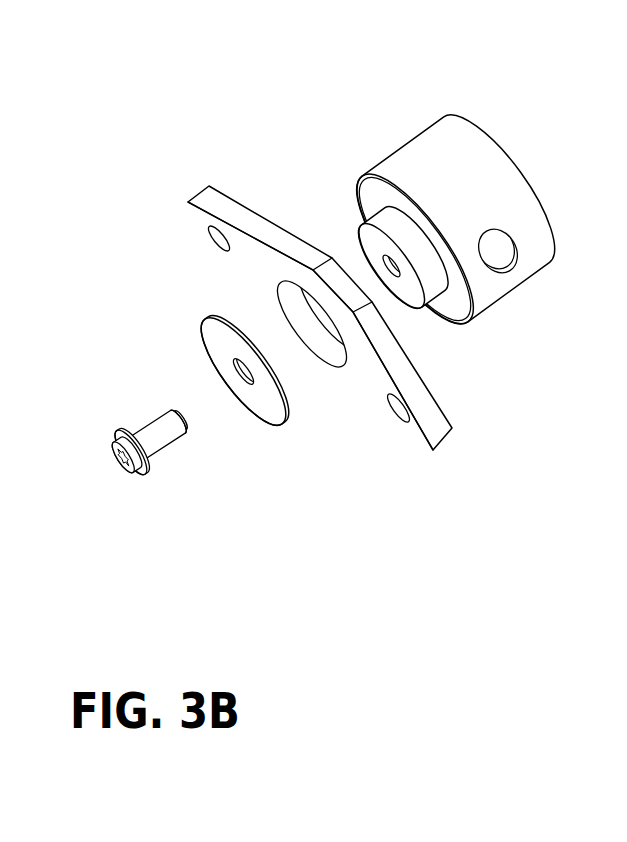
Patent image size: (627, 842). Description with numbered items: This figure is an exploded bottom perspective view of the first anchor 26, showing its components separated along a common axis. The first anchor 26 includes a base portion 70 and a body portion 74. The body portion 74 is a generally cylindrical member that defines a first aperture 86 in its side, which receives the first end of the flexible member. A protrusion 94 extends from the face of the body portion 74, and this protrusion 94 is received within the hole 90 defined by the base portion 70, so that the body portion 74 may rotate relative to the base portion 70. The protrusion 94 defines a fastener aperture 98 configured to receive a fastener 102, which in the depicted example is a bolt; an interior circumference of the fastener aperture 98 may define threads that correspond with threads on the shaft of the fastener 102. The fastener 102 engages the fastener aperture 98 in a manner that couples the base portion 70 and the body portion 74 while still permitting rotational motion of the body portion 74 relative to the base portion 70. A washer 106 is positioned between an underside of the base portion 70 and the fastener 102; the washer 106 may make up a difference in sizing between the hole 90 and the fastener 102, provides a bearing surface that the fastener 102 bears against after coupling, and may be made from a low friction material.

The first anchor 26 is at (202, 133).
The base portion 70 is at (273, 338).
The body portion 74 is at (447, 239).
The first aperture 86 is at (510, 268).
The hole 90 is at (322, 340).
The protrusion 94 is at (408, 259).
The fastener aperture 98 is at (393, 268).
The fastener 102 is at (133, 469).
The washer 106 is at (210, 350).